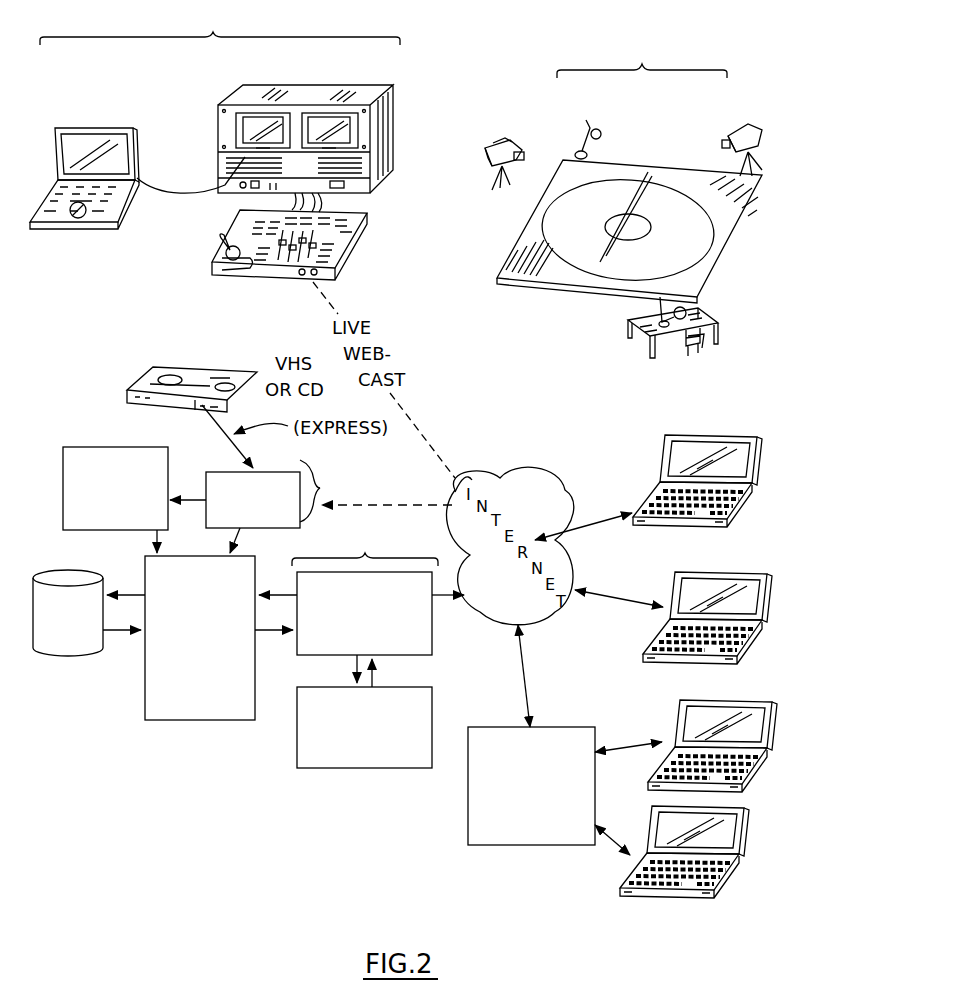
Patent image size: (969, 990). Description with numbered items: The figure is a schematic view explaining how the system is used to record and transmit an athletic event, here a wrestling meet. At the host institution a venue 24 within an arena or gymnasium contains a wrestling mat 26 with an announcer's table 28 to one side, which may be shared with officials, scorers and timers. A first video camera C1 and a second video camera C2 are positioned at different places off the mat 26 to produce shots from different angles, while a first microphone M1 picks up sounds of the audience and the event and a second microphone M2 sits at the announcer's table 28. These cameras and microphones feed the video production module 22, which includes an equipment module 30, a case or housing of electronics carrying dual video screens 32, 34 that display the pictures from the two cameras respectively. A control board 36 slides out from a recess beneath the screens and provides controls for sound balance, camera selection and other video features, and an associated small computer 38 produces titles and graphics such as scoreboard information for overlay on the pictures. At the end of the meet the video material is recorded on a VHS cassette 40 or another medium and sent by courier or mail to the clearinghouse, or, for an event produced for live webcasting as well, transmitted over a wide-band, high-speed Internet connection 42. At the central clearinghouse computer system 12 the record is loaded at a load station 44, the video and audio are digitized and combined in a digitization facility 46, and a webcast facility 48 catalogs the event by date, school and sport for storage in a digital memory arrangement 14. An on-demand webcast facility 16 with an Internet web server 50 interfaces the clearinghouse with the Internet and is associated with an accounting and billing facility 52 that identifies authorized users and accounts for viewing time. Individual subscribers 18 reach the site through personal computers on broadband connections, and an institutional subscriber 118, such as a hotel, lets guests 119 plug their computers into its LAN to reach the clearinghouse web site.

The video production module 22 is at (220, 27).
The equipment module 30 is at (318, 95).
The video screen 32 is at (237, 128).
The video screen 34 is at (358, 130).
The control board 36 is at (362, 252).
The small computer 38 is at (70, 228).
The venue 24 is at (642, 60).
The first video camera C1 is at (502, 145).
The second video camera C2 is at (739, 134).
The first microphone M1 is at (592, 126).
The second microphone M2 is at (699, 310).
The wrestling mat 26 is at (522, 255).
The announcer's table 28 is at (627, 335).
The VHS cassette 40 is at (144, 378).
The wide-band, high-speed Internet connection 42 is at (408, 410).
The central clearinghouse computer system 12 is at (322, 485).
The load station 44 is at (224, 472).
The digitization facility 46 is at (116, 447).
The webcast facility 48 is at (205, 720).
The digital memory arrangement 14 is at (68, 650).
The on-demand webcast facility 16 is at (365, 548).
The Internet web server 50 is at (432, 630).
The accounting and billing facility 52 is at (432, 710).
The subscriber 18 is at (752, 470).
The institutional subscriber 118 is at (558, 727).
The guests 119 is at (757, 752).